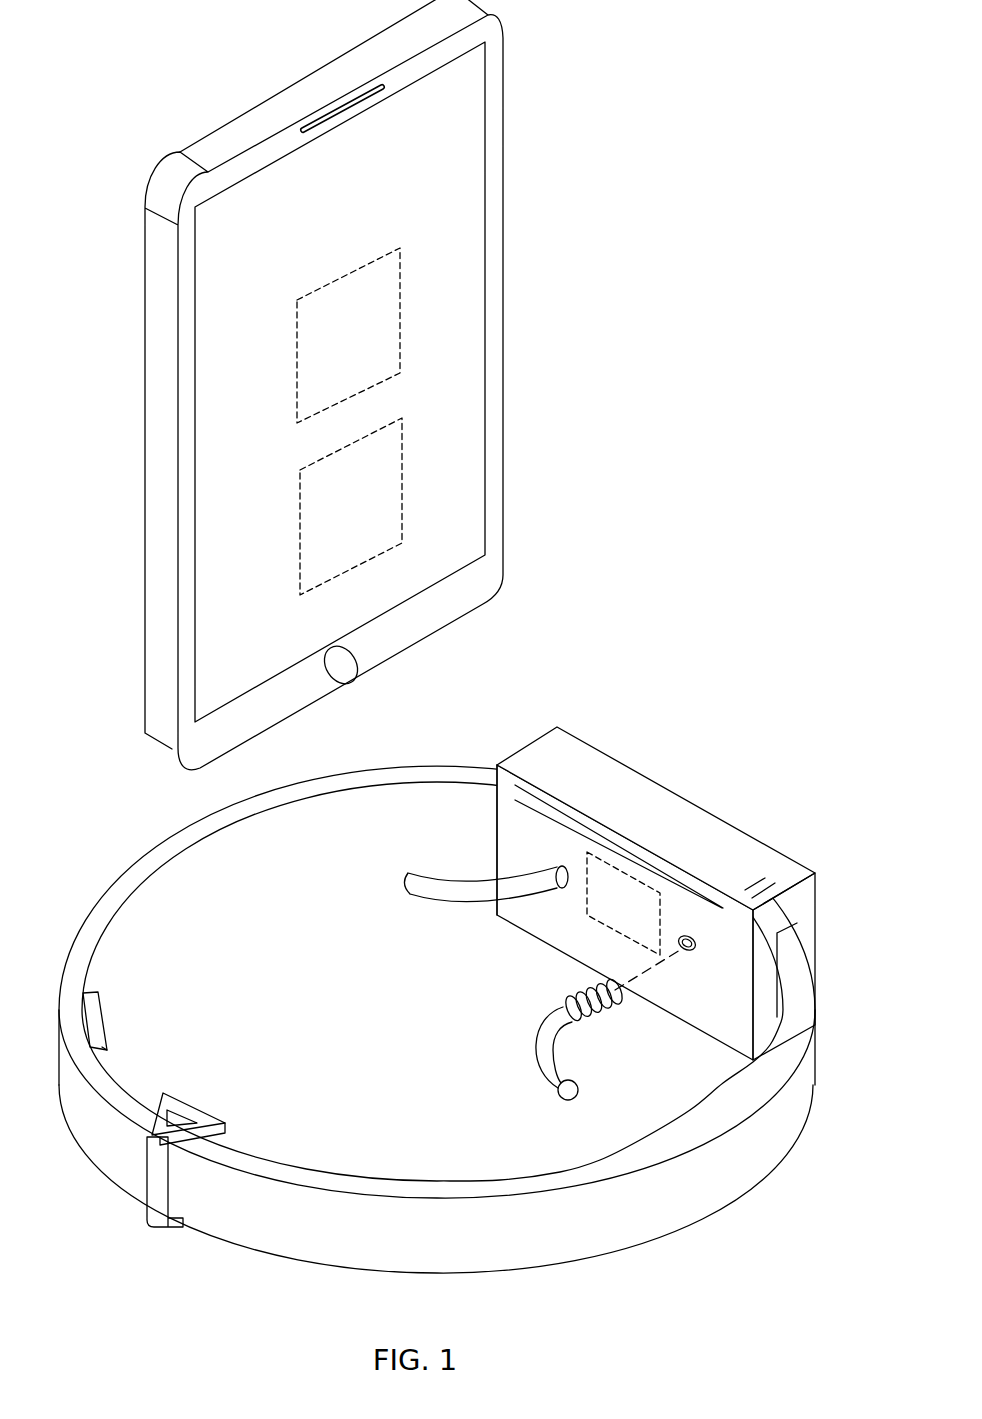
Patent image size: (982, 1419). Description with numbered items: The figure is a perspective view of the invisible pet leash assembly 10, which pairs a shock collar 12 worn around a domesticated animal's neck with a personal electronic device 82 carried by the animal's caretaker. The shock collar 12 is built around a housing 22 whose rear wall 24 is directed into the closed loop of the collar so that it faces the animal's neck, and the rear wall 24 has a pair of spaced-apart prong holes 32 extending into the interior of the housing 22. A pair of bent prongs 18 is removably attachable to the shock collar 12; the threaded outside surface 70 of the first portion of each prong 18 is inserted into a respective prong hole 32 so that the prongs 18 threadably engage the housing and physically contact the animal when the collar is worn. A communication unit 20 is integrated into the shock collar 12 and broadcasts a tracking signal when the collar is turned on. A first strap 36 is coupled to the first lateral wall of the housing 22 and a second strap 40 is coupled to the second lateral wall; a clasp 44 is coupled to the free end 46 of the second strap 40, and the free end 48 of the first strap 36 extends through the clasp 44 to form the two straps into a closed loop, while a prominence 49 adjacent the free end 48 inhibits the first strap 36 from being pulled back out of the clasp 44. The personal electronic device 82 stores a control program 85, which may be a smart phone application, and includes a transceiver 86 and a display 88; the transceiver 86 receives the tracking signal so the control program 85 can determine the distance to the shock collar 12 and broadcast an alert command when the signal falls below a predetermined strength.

The invisible pet leash assembly 10 is at (676, 386).
The shock collar 12 is at (722, 720).
The prongs 18 is at (431, 893).
The communication unit 20 is at (612, 867).
The housing 22 is at (760, 828).
The rear wall 24 is at (508, 812).
The prong holes 32 is at (558, 887).
The first strap 36 is at (753, 1140).
The second strap 40 is at (110, 870).
The clasp 44 is at (211, 1119).
The free end 46 is at (165, 1190).
The free end 48 is at (90, 992).
The prominence 49 is at (108, 1032).
The outside surface 70 is at (563, 1000).
The personal electronic device 82 is at (230, 157).
The control program 85 is at (360, 268).
The transceiver 86 is at (403, 472).
The display 88 is at (490, 272).